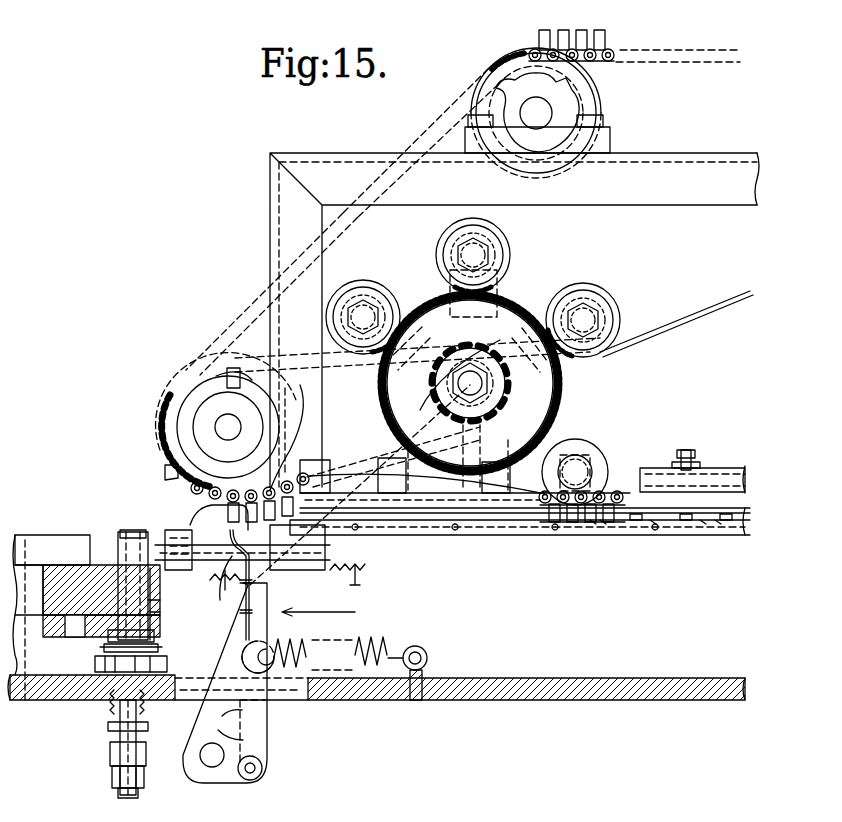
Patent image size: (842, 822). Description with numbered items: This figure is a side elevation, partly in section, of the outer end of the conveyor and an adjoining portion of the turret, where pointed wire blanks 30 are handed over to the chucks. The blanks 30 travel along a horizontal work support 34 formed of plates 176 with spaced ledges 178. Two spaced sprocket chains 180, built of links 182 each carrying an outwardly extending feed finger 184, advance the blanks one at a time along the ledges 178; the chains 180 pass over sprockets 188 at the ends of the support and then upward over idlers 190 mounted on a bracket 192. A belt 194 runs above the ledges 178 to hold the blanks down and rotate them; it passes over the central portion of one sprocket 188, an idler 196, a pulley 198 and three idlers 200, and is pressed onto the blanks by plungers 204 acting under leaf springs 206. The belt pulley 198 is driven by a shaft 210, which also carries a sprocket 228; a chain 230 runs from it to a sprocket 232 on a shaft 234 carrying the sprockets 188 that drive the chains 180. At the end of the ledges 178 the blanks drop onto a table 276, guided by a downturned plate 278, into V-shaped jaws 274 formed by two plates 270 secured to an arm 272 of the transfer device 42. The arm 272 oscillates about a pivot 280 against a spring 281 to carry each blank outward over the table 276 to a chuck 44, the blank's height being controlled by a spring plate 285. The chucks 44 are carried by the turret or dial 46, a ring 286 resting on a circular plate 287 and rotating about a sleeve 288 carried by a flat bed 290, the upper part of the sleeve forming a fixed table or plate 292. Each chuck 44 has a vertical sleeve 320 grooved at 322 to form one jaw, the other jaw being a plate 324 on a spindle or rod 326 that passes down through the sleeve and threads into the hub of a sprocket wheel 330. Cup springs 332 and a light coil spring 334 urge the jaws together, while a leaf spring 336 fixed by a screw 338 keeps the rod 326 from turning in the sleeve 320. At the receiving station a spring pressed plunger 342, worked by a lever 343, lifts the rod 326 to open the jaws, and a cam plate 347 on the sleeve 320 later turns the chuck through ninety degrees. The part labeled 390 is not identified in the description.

The blanks 30 is at (714, 535).
The work support 34 is at (472, 525).
The transfer device 42 is at (333, 613).
The work-holding chucks 44 is at (118, 527).
The turret or dial 46 is at (112, 565).
The plates 176 is at (500, 535).
The ledges 178 is at (656, 535).
The sprocket chains 180 is at (612, 55).
The links 182 is at (600, 490).
The feed finger 184 is at (576, 522).
The sprockets 188 is at (187, 372).
The idlers 190 is at (565, 92).
The bracket 192 is at (640, 187).
The belt 194 is at (645, 322).
The idler 196 is at (578, 458).
The belt pulley 198 is at (556, 392).
The idlers 200 is at (378, 288).
The plungers 204 is at (690, 470).
The leaf springs 206 is at (681, 460).
The shaft 210 is at (440, 403).
The sprocket 228 is at (478, 370).
The chain 230 is at (296, 418).
The sprocket 232 is at (178, 425).
The shaft 234 is at (228, 427).
The plates 270 is at (246, 598).
The arm 272 is at (264, 656).
The V-shaped jaws 274 is at (221, 585).
The table 276 is at (200, 525).
The downturned plate 278 is at (180, 470).
The pivot 280 is at (213, 765).
The spring 281 is at (408, 690).
The spring plate 285 is at (192, 527).
The ring 286 is at (47, 579).
The circular plate 287 is at (46, 690).
The sleeve 288 is at (45, 565).
The flat bed 290 is at (62, 700).
The fixed table or plate 292 is at (48, 535).
The vertical sleeve 320 is at (150, 592).
The groove 322 is at (152, 572).
The plate 324 is at (168, 530).
The spindle or rod 326 is at (152, 610).
The sprocket wheel 330 is at (110, 698).
The cup springs 332 is at (108, 628).
The coil spring 334 is at (158, 648).
The leaf spring 336 is at (146, 708).
The screw 338 is at (100, 712).
The spring pressed plunger 342 is at (137, 752).
The lever 343 is at (122, 778).
The cam plate 347 is at (155, 632).
The nut 390 is at (167, 665).